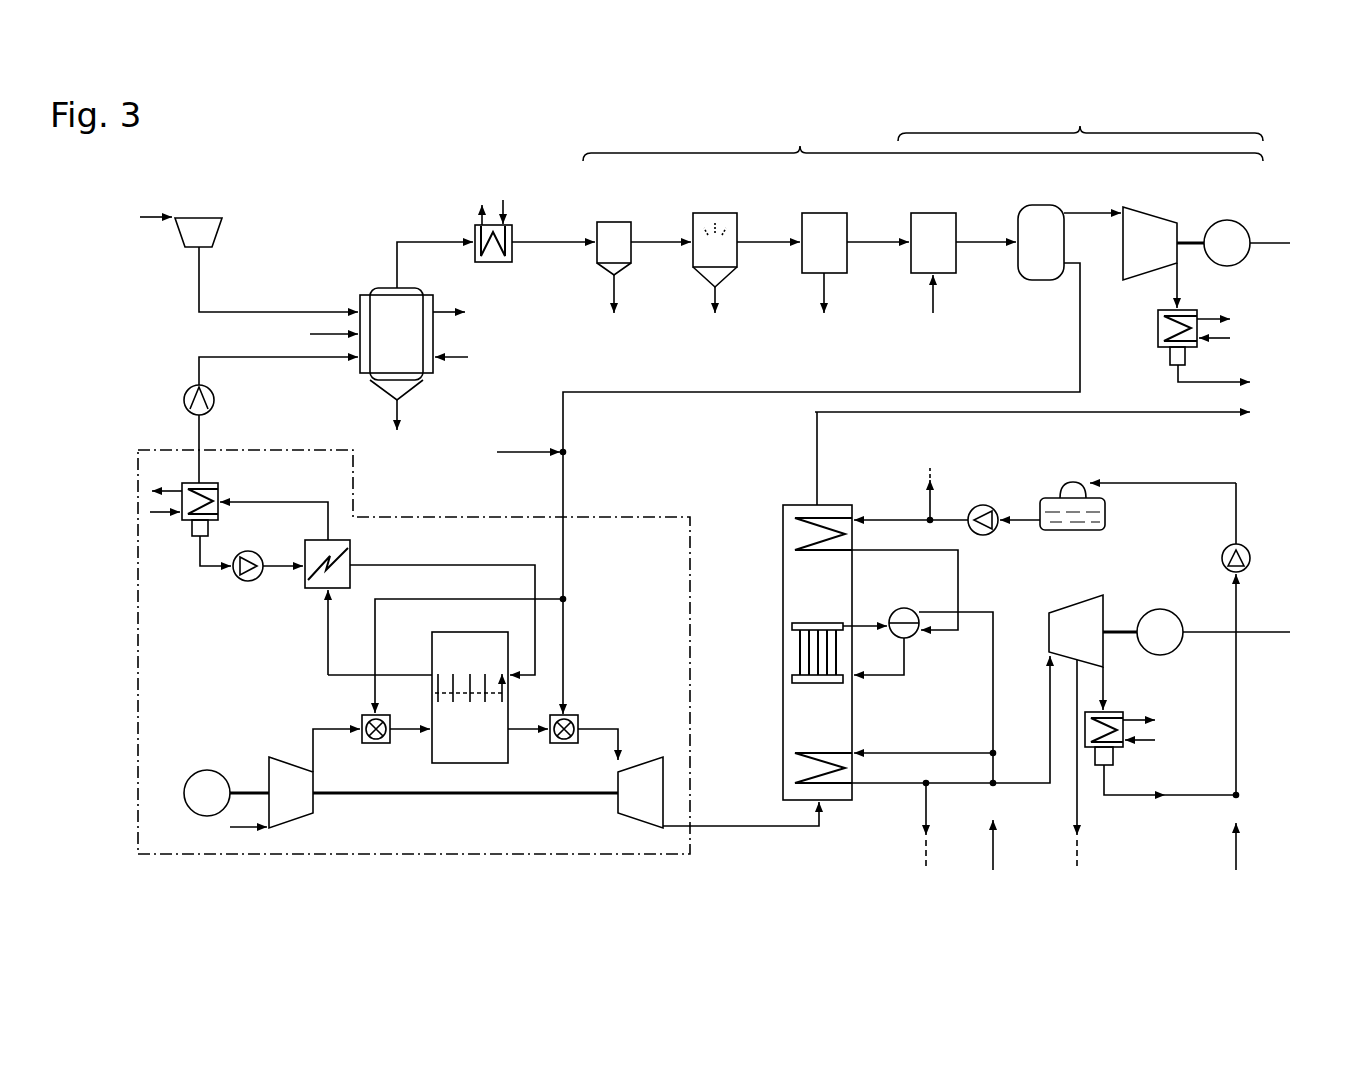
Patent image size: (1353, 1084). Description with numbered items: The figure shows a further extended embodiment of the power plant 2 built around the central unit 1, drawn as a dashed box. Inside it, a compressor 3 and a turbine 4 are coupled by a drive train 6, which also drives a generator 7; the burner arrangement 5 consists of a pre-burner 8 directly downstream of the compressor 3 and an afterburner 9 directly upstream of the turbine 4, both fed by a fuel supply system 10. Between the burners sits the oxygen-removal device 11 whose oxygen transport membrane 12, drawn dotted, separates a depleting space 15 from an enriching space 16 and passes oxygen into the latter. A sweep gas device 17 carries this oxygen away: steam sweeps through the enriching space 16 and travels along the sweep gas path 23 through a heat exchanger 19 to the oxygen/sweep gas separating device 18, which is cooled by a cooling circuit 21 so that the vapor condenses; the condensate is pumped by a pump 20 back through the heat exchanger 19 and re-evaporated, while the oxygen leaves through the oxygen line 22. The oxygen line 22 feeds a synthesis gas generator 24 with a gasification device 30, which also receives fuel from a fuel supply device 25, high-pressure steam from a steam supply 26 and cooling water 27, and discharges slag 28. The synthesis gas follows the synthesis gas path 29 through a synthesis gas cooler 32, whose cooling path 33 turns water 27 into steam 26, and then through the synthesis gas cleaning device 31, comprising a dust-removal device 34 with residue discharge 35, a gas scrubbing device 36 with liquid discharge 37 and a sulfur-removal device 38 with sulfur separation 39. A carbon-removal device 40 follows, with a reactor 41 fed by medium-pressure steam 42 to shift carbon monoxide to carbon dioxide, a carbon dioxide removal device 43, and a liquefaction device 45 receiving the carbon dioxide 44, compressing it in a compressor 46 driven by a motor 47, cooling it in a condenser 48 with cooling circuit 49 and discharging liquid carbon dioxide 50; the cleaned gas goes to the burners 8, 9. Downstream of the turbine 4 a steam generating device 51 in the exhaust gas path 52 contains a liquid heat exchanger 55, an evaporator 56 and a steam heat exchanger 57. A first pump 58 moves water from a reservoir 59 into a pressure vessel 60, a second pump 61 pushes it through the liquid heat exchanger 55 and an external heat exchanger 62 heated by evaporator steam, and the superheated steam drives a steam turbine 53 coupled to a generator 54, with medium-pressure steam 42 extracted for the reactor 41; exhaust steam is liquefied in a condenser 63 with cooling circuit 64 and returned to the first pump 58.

The central unit 1 is at (180, 857).
The power plant 2 is at (1278, 167).
The compressor 3 is at (271, 792).
The turbine 4 is at (640, 792).
The burner arrangement 5 is at (573, 741).
The drive train 6 is at (538, 795).
The generator 7 is at (184, 793).
The pre-burner 8 is at (368, 743).
The afterburner 9 is at (556, 741).
The fuel supply system 10 is at (982, 390).
The oxygen-removal device 11 is at (492, 763).
The oxygen transport membrane 12 is at (458, 698).
The depleting space 15 is at (470, 748).
The enriching space 16 is at (470, 652).
The sweep gas device 17 is at (492, 565).
The oxygen/sweep gas separating device 18 is at (186, 521).
The heat exchanger 19 is at (310, 582).
The pump 20 is at (234, 574).
The cooling circuit 21 is at (185, 505).
The oxygen line 22 is at (199, 430).
The sweep gas path 23 is at (463, 565).
The synthesis gas generator 24 is at (392, 308).
The fuel supply device 25 is at (255, 312).
The steam supply 26 is at (330, 334).
The water feed 27 is at (510, 147).
The slag discharge 28 is at (397, 432).
The synthesis gas path 29 is at (420, 243).
The gasification device 30 is at (385, 325).
The synthesis gas cleaning device 31 is at (923, 139).
The synthesis gas cooler 32 is at (473, 225).
The cooling path 33 is at (512, 226).
The dust-removal device 34 is at (620, 250).
The residue discharge 35 is at (614, 311).
The gas scrubbing device 36 is at (727, 233).
The contaminated scrubbing liquid discharge 37 is at (715, 317).
The sulfur-removal device 38 is at (824, 232).
The sulfur separation 39 is at (824, 310).
The carbon-removal device 40 is at (1080, 118).
The reactor 41 is at (933, 232).
The medium-pressure steam 42 is at (1005, 590).
The carbon dioxide removal device 43 is at (1036, 232).
The carbon dioxide feed 44 is at (1095, 213).
The liquefaction device 45 is at (1160, 216).
The compressor 46 is at (1150, 242).
The motor 47 is at (1253, 243).
The condenser 48 is at (1192, 311).
The cooling circuit 49 is at (1200, 350).
The liquefied carbon dioxide discharge 50 is at (1208, 382).
The steam generating device 51 is at (839, 800).
The exhaust gas path 52 is at (1165, 412).
The steam turbine 53 is at (1093, 631).
The generator 54 is at (1233, 632).
The liquid heat exchanger 55 is at (815, 535).
The evaporator 56 is at (800, 655).
The steam heat exchanger 57 is at (815, 770).
The first pump 58 is at (1252, 558).
The reservoir 59 is at (1177, 835).
The pressure vessel 60 is at (1073, 492).
The second pump 61 is at (983, 505).
The external heat exchanger 62 is at (904, 618).
The condenser 63 is at (1119, 712).
The cooling circuit 64 is at (1123, 745).